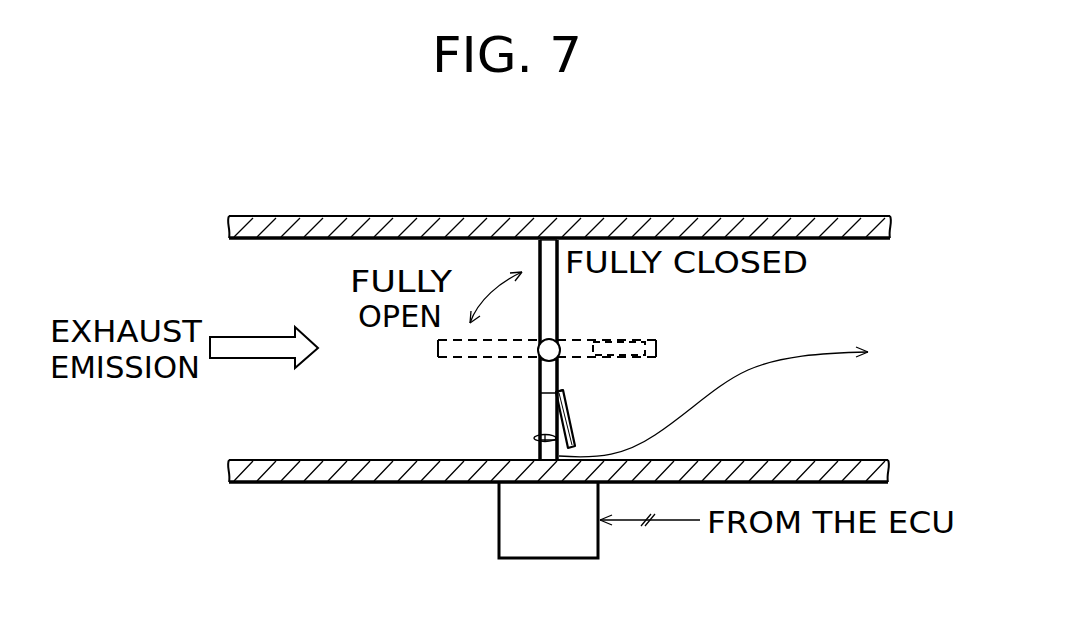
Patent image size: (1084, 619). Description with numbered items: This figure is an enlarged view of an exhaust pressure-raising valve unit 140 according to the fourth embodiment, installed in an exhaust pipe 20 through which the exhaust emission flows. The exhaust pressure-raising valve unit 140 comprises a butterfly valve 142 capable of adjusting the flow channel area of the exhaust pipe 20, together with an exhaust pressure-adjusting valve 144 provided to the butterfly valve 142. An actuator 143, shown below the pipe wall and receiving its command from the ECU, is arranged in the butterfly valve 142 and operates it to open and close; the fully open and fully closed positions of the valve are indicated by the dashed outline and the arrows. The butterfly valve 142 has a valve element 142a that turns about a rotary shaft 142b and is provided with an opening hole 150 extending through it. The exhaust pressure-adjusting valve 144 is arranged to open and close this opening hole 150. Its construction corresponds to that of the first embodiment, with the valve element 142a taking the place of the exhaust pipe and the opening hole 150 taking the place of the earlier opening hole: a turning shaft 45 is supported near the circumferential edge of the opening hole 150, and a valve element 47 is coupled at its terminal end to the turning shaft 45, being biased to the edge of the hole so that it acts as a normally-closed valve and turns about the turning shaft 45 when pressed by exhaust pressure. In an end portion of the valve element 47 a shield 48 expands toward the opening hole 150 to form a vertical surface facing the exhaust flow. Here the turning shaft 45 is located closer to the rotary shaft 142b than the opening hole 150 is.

The exhaust pipe 20 is at (412, 216).
The exhaust pressure-raising valve unit 140 is at (692, 198).
The butterfly valve 142 is at (536, 452).
The valve element 142a is at (540, 382).
The rotary shaft 142b is at (556, 350).
The actuator 143 is at (508, 547).
The exhaust pressure-adjusting valve 144 is at (576, 411).
The opening hole 150 is at (540, 410).
The shield 48 is at (534, 429).
The turning shaft 45 is at (560, 391).
The valve element 47 is at (577, 428).